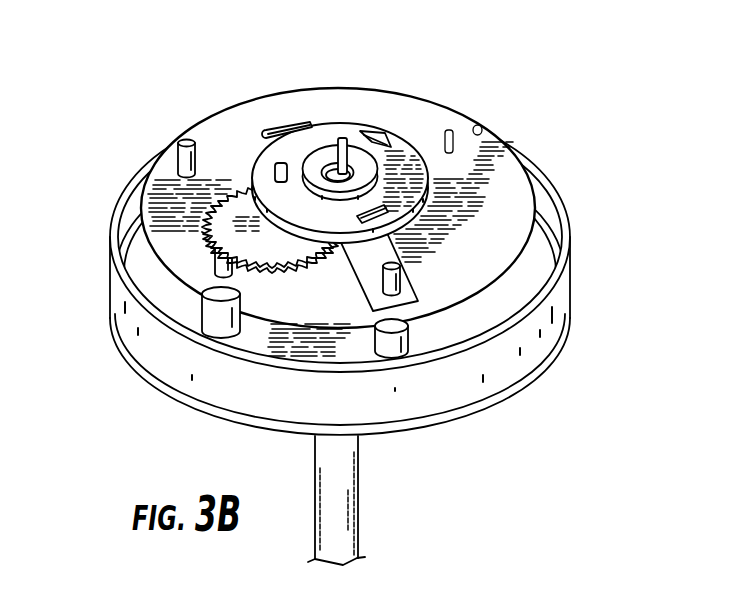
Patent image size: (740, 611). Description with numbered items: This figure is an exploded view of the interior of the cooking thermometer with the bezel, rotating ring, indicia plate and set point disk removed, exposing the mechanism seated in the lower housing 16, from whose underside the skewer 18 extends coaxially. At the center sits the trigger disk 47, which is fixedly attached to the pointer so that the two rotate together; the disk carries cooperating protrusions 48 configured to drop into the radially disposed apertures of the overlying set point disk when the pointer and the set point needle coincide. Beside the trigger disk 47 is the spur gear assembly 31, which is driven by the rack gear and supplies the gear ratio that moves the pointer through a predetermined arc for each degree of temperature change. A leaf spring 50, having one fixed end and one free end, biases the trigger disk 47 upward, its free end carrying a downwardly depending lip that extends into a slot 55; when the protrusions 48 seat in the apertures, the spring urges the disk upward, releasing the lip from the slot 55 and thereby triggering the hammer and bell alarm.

The lower housing 16 is at (567, 324).
The skewer 18 is at (358, 503).
The spur gear assembly 31 is at (207, 212).
The trigger disk 47 is at (342, 122).
The protrusions 48 is at (277, 170).
The leaf spring 50 is at (372, 268).
The slot 55 is at (265, 130).